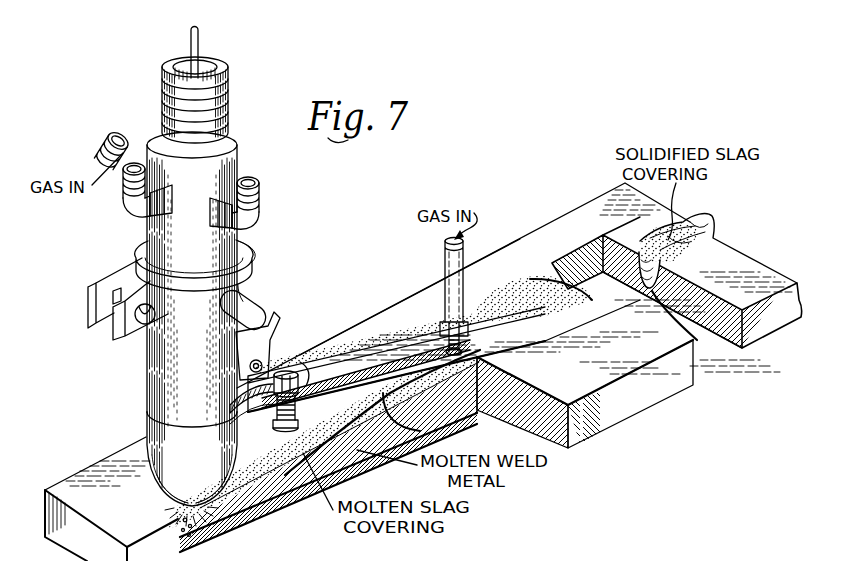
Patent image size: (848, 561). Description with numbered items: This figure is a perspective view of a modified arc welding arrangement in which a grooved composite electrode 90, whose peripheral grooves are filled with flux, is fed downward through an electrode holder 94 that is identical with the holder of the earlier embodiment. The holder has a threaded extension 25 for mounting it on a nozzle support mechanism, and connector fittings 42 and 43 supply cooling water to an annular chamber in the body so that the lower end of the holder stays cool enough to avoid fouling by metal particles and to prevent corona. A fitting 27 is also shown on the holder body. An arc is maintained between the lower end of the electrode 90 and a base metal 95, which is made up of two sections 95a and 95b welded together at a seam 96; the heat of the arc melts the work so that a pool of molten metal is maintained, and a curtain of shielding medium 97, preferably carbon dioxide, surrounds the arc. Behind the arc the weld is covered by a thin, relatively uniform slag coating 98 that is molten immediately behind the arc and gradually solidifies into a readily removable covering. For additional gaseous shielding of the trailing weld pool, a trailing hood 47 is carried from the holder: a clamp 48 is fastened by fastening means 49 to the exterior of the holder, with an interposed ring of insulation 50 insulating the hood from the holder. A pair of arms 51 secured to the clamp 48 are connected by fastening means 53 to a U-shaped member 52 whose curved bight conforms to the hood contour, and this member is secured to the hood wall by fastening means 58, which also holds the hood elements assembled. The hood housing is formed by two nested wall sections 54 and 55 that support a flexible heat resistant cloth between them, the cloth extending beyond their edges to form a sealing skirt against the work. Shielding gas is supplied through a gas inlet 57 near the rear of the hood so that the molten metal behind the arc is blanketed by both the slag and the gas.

The electrode structure 90 is at (203, 44).
The extension 25 is at (227, 100).
The connector fitting 42 is at (106, 136).
The gas inlet fitting 27 is at (130, 208).
The connector fitting 43 is at (258, 204).
The ring of insulation 50 is at (145, 250).
The clamp 48 is at (238, 265).
The fastening means 49 is at (140, 325).
The electrode holder 94 is at (142, 358).
The arms 51 is at (252, 311).
The fastening means 53 is at (257, 358).
The U-shaped member 52 is at (279, 372).
The fastening means 58 is at (306, 368).
The wall section 55 is at (262, 412).
The wall section 54 is at (405, 313).
The trailing hood 47 is at (352, 340).
The gas inlet 57 is at (445, 258).
The base metal 95 is at (120, 457).
The base metal section 95a is at (518, 243).
The base metal section 95b is at (637, 395).
The seam 96 is at (303, 440).
The shielding medium 97 is at (172, 510).
The slag coating 98 is at (418, 430).